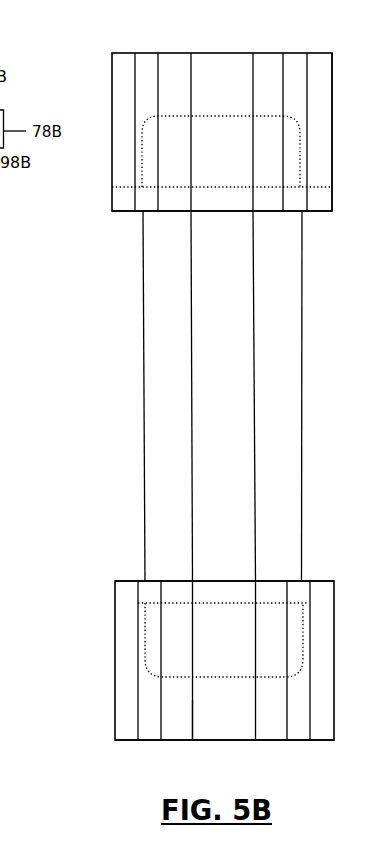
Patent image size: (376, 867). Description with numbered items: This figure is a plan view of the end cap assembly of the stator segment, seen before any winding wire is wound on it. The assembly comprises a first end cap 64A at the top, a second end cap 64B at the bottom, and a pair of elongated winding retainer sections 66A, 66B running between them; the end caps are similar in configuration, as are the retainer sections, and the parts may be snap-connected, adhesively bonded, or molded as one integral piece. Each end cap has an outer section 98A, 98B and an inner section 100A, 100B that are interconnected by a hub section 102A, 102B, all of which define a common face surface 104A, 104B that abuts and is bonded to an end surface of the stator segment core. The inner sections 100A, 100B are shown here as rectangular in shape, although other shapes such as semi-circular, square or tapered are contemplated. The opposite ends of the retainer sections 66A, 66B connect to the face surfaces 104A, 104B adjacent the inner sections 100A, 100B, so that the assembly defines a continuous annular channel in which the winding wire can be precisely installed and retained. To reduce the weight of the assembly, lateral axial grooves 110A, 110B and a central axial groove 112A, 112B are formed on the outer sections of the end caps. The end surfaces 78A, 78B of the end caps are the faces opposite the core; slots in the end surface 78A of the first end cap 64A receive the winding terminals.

The first end cap 64A is at (95, 75).
The second end cap 64B is at (98, 701).
The winding retainer section 66A is at (182, 318).
The winding retainer section 66B is at (294, 318).
The end surface of the first end cap 78A is at (125, 53).
The end surface of the second end cap 78B is at (270, 740).
The outer section 98A is at (313, 93).
The outer section 98B is at (128, 670).
The inner section 100A is at (213, 117).
The inner section 100B is at (143, 638).
The hub section 102A is at (245, 195).
The hub section 102B is at (200, 590).
The face surface 104A is at (315, 211).
The face surface 104B is at (312, 578).
The lateral axial groove 110A is at (146, 92).
The lateral axial groove 110B is at (145, 717).
The central axial groove 112A is at (203, 107).
The central axial groove 112B is at (208, 718).